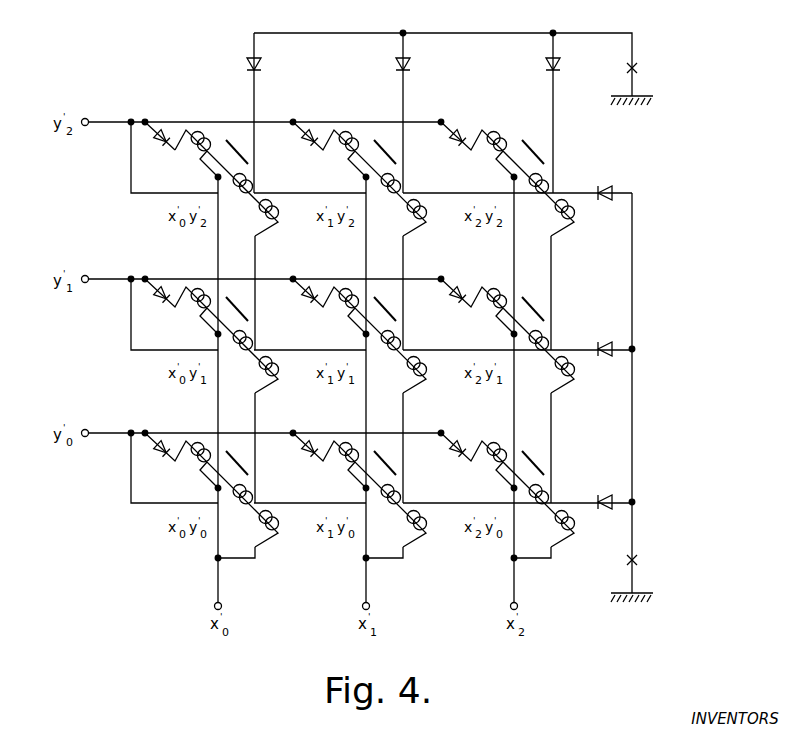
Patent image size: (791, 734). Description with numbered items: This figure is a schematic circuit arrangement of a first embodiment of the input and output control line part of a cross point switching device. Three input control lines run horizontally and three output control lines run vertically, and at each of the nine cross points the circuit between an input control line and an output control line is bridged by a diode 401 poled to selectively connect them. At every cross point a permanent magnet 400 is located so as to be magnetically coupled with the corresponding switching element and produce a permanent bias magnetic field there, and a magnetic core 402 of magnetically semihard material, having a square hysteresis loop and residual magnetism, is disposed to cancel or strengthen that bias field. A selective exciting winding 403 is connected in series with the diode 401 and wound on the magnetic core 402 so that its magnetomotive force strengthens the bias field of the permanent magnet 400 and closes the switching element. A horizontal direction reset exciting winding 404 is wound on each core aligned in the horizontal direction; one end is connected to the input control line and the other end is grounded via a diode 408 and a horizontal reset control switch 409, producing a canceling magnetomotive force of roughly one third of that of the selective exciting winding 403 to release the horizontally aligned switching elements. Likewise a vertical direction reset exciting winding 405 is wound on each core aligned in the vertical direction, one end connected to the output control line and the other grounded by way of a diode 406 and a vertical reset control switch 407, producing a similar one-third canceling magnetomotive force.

The permanent magnet 400 is at (234, 142).
The diode 401 is at (160, 143).
The magnetic core 402 is at (192, 131).
The selective exciting winding 403 is at (204, 137).
The horizontal direction reset exciting winding 404 is at (247, 178).
The vertical direction reset exciting winding 405 is at (265, 210).
The diode 406 is at (410, 64).
The vertical reset control switch 407 is at (637, 68).
The diode 408 is at (603, 342).
The horizontal reset control switch 409 is at (640, 560).